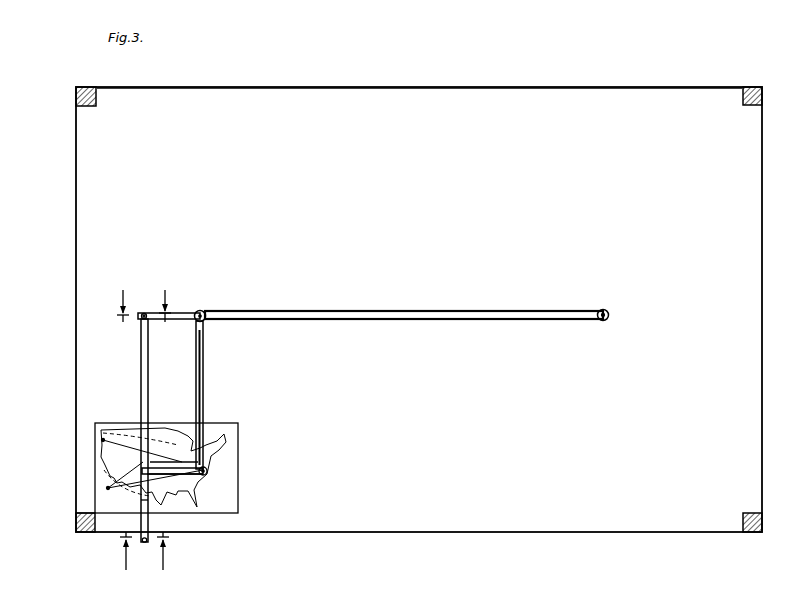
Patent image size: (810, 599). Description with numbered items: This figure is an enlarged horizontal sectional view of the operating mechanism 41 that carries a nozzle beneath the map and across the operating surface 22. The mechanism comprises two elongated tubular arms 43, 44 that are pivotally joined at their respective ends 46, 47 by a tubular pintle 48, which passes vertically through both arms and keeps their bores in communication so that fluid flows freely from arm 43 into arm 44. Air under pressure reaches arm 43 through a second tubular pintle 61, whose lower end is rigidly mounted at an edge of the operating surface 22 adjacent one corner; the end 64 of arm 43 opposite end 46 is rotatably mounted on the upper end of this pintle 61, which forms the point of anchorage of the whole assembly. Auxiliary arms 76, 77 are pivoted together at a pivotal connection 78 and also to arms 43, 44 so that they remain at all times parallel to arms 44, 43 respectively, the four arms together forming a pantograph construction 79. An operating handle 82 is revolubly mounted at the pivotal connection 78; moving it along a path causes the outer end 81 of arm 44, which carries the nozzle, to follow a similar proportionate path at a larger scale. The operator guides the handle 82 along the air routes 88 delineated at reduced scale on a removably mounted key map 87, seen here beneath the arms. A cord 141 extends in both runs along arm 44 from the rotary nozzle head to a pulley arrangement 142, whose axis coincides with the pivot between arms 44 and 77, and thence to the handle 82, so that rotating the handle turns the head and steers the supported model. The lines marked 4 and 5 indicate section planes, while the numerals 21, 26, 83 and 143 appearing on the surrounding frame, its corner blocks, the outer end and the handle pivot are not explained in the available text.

The board 21 is at (329, 100).
The operating surface 22 is at (538, 100).
The corner block 26 is at (752, 86).
The key map 87 is at (102, 434).
The air routes 88 is at (105, 443).
The end of arm 43 46 is at (141, 322).
The end of arm 44 47 is at (156, 320).
The tubular pintle 48 is at (144, 312).
The section line 5 is at (142, 305).
The tubular arm 43 is at (140, 366).
The pulley arrangement 142 is at (202, 311).
The auxiliary arm 77 is at (205, 366).
The tubular arm 44 is at (448, 311).
The cord 141 is at (548, 320).
The pantograph construction 79 is at (264, 293).
The outer end of arm 44 81 is at (605, 310).
The end pin head 83 is at (609, 313).
The pivotal connection 78 is at (146, 470).
The operating handle 82 is at (184, 462).
The pin 143 is at (207, 473).
The auxiliary arm 76 is at (165, 472).
The end of arm 43 64 is at (146, 505).
The tubular pintle 61 is at (144, 546).
The section line 4 is at (142, 551).
The operating mechanism 41 is at (300, 400).